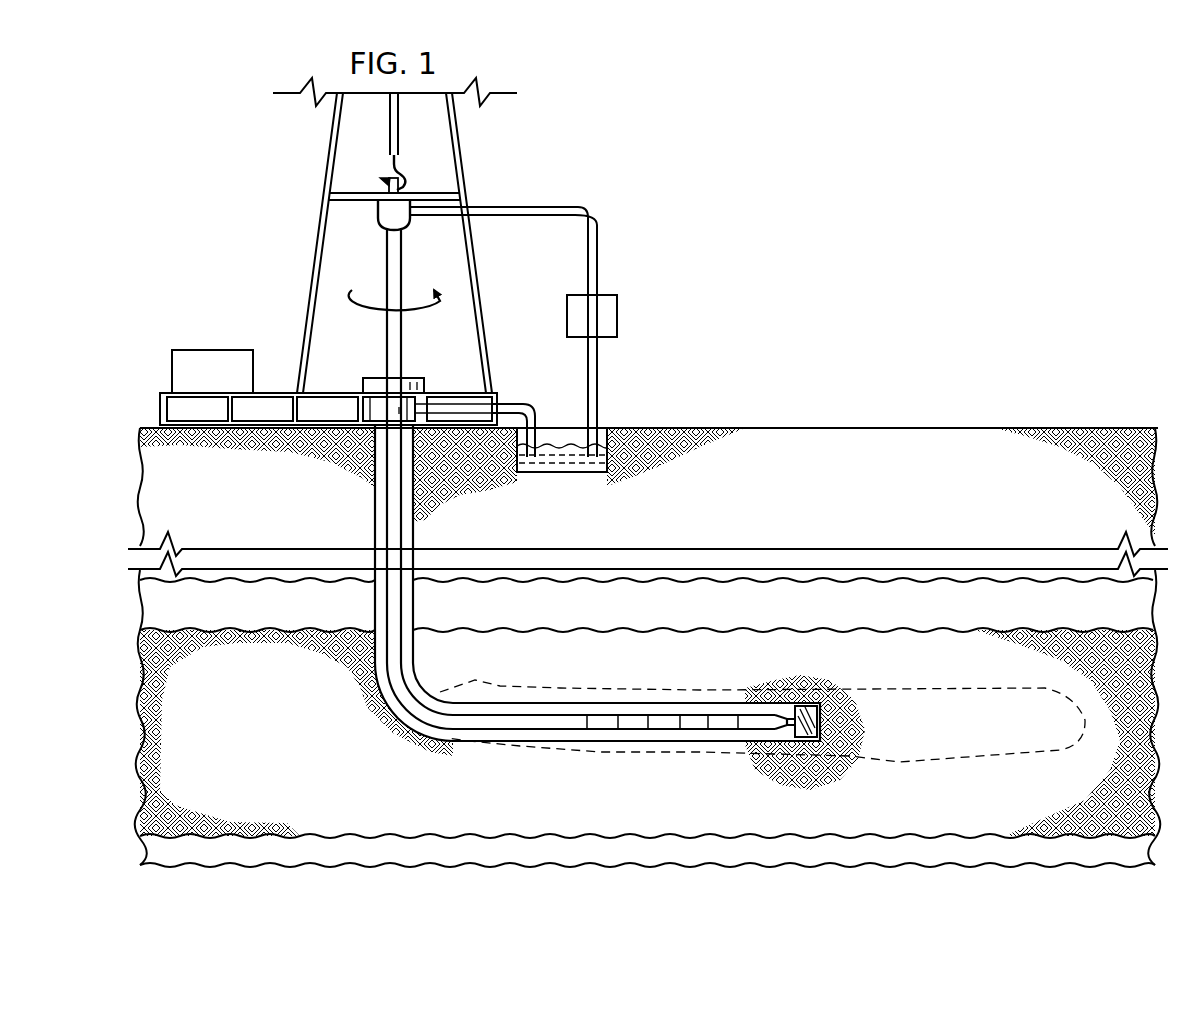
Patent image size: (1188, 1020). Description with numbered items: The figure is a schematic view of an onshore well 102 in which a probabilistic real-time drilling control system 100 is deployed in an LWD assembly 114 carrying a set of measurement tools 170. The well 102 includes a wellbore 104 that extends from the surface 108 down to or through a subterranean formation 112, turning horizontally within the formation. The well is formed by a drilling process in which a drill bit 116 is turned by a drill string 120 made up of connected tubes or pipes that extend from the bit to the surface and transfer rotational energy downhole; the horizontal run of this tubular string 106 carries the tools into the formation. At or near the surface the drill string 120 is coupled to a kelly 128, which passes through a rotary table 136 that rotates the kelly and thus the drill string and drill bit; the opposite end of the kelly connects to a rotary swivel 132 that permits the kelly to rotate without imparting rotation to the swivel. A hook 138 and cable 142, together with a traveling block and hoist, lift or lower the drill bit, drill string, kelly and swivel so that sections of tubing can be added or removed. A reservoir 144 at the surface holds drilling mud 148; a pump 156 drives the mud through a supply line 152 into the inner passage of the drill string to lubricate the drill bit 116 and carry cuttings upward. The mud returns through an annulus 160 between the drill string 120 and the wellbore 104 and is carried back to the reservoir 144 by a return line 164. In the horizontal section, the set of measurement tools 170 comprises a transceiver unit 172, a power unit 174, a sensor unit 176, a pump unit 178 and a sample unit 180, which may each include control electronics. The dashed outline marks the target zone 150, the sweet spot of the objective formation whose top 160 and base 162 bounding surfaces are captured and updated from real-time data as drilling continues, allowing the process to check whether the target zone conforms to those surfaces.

The real-time drilling control system 100 is at (260, 224).
The well 102 is at (418, 370).
The wellbore 104 is at (522, 741).
The drill string 106 is at (606, 732).
The surface 108 is at (690, 428).
The subterranean formation 112 is at (301, 737).
The LWD assembly 114 is at (494, 702).
The drill bit 116 is at (799, 703).
The drill string 120 is at (478, 741).
The kelly 128 is at (390, 483).
The rotary swivel 132 is at (385, 228).
The rotary table 136 is at (372, 378).
The hook 138 is at (410, 180).
The cable 142 is at (387, 150).
The reservoir 144 is at (568, 474).
The drilling mud 148 is at (545, 445).
The target zone 150 is at (880, 688).
The supply line 152 is at (586, 207).
The pump 156 is at (620, 312).
The annulus / top bounding surface 160 is at (947, 630).
The base of the objective formation 162 is at (920, 836).
The return line 164 is at (512, 404).
The set of measurement tools 170 is at (588, 681).
The transceiver unit 172 is at (602, 729).
The power unit 174 is at (632, 729).
The sensor unit 176 is at (664, 729).
The pump unit 178 is at (694, 729).
The sample unit 180 is at (722, 729).